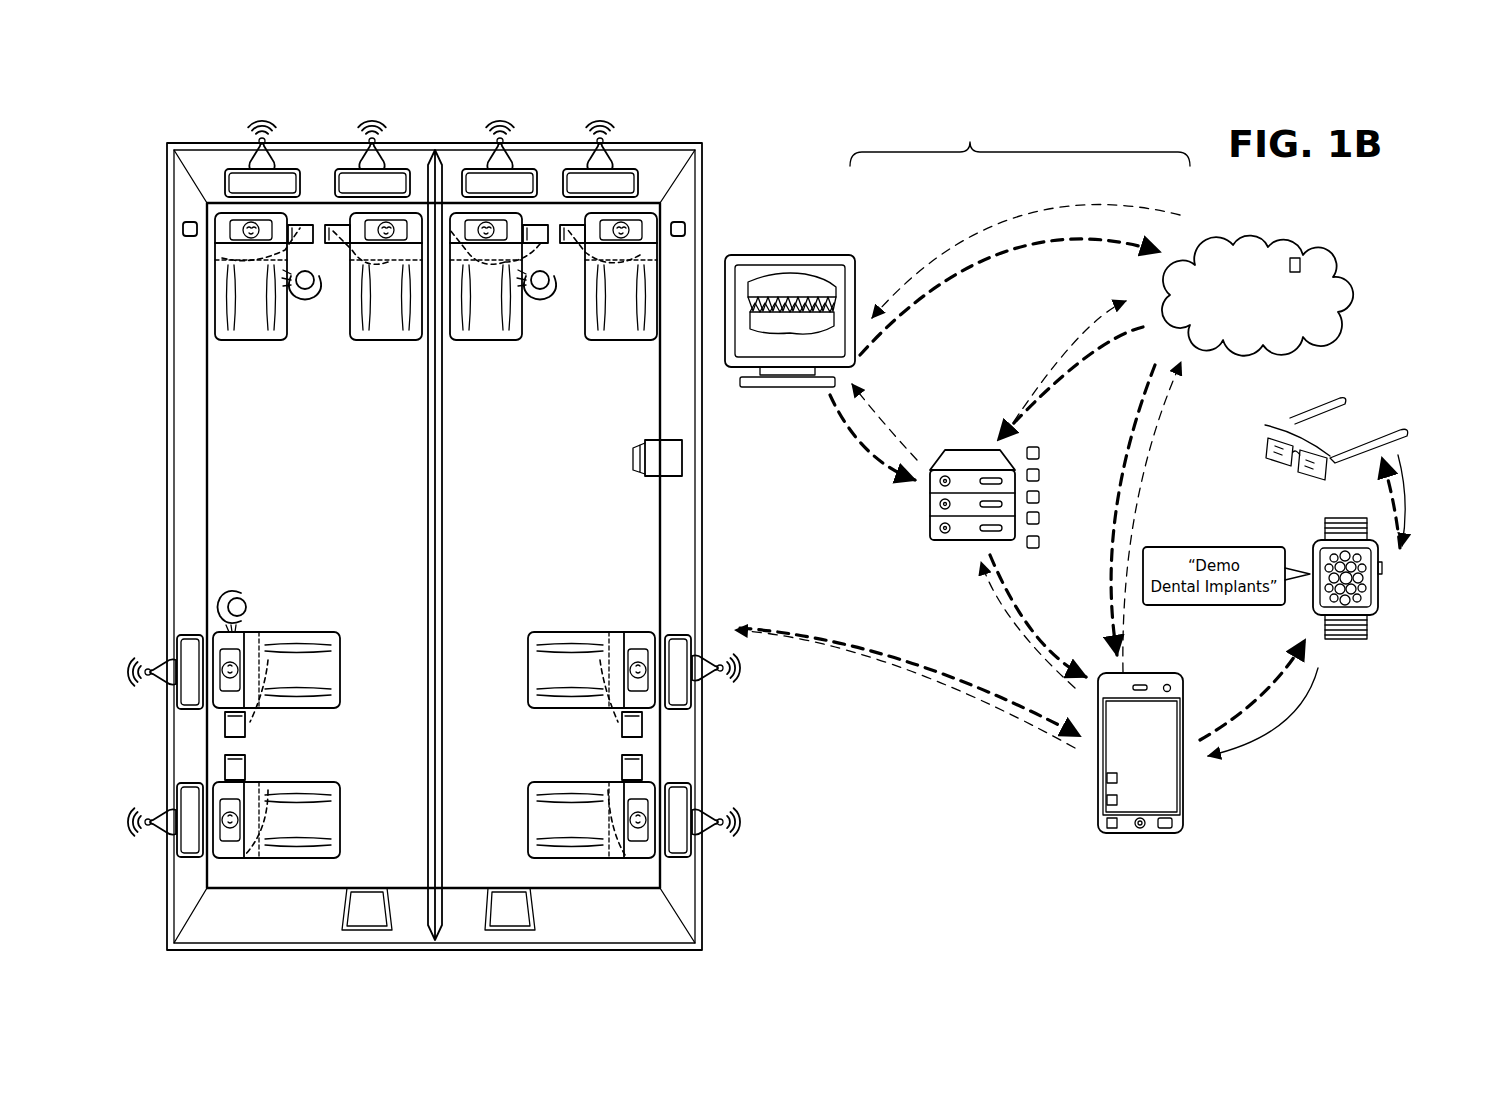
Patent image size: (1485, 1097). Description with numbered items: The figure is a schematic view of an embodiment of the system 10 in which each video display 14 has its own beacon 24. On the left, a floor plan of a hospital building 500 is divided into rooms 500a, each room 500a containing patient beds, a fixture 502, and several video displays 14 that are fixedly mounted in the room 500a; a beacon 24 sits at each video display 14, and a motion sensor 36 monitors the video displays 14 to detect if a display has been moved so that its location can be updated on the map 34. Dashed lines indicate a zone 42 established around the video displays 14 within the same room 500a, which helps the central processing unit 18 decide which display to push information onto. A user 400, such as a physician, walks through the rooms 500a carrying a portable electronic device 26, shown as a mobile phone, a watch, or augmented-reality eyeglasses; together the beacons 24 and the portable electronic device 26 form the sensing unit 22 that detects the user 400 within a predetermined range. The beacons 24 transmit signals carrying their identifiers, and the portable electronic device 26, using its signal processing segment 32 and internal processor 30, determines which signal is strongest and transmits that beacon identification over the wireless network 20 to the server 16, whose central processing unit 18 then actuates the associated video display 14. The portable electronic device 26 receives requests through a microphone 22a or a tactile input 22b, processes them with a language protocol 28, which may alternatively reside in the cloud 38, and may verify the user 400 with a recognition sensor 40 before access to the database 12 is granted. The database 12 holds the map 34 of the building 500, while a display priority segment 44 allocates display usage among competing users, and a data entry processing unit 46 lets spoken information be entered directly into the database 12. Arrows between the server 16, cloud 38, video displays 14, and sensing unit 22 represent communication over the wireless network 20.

The system 10 is at (1020, 140).
The database 12 is at (1039, 453).
The video display 14 is at (290, 168).
The server 16 is at (1007, 438).
The central processing unit 18 is at (1039, 475).
The wireless network 20 is at (1054, 204).
The sensing unit 22 is at (784, 478).
The microphone 22a is at (1172, 688).
The tactile input 22b is at (1145, 780).
The beacon 24 is at (742, 860).
The portable electronic device 26 is at (1412, 412).
The language protocol 28 is at (1104, 800).
The internal processor 30 is at (1112, 830).
The signal processing segment 32 is at (1039, 497).
The map 34 is at (1039, 518).
The motion sensor 36 is at (180, 232).
The cloud 38 is at (1216, 232).
The recognition sensor 40 is at (1104, 778).
The zone 42 is at (212, 243).
The display priority segment 44 is at (1039, 542).
The data entry processing unit 46 is at (1163, 830).
The user 400 is at (305, 300).
The building 500 is at (672, 102).
The room 500a is at (198, 434).
The fixture 502 is at (672, 462).